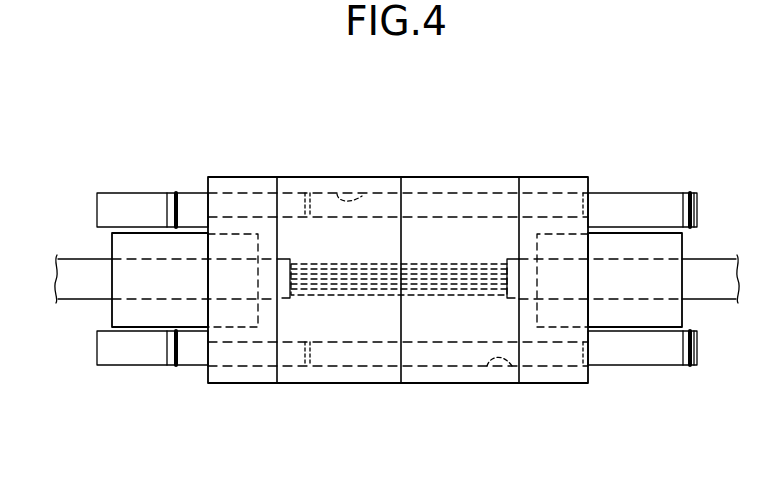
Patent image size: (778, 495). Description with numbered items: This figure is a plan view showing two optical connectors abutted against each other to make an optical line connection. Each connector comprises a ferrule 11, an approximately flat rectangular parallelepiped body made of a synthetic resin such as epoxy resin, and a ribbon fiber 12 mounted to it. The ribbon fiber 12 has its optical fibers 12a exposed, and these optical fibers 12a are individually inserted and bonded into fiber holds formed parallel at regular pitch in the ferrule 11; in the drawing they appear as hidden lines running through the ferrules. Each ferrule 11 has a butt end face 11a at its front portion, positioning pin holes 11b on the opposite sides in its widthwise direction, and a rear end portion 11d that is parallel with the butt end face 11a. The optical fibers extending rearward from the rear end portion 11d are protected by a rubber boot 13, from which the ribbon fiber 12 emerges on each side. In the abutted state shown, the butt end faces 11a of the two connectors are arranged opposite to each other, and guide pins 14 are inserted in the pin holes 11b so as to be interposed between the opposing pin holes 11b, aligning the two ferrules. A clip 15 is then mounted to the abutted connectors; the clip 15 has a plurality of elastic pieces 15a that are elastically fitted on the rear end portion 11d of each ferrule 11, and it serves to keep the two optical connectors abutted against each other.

The ferrule 11 is at (304, 176).
The butt end face 11a is at (401, 186).
The positioning pin hole 11b is at (343, 196).
The rear end portion 11d is at (208, 200).
The ribbon fiber 12 is at (68, 302).
The optical fiber 12a is at (305, 292).
The rubber boot 13 is at (130, 242).
The guide pin 14 is at (540, 205).
The clip 15 is at (682, 367).
The elastic piece 15a is at (150, 203).